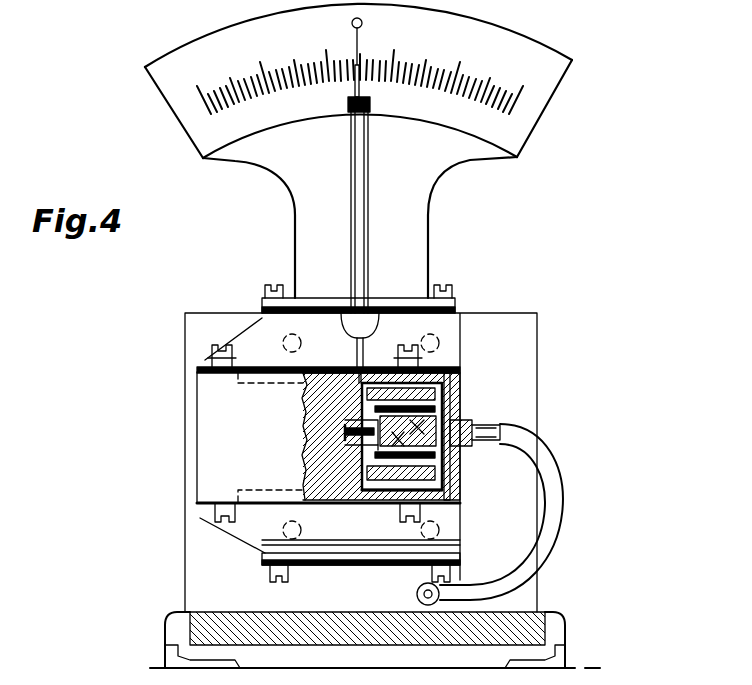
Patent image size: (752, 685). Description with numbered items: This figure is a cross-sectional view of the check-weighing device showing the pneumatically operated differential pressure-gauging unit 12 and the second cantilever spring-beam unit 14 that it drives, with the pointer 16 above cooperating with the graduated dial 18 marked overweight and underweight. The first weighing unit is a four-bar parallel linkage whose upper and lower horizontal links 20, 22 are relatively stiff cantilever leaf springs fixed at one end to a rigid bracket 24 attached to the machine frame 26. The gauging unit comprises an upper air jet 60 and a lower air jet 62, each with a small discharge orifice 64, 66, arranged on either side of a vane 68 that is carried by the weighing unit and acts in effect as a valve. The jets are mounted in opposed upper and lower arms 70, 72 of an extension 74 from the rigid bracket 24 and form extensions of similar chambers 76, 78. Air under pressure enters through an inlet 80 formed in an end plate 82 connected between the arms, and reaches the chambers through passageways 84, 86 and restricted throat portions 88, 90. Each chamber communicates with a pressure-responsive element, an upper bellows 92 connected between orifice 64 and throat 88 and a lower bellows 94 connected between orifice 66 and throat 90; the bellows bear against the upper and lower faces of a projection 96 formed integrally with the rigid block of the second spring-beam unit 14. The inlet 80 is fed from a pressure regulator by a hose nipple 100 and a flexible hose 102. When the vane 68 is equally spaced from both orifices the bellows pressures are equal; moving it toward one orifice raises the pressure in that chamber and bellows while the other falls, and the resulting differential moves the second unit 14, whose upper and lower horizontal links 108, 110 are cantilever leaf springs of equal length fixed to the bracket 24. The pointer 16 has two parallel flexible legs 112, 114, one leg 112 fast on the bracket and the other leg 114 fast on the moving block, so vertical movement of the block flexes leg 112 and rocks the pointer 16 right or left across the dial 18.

The pneumatically operated differential pressure-gauging unit 12 is at (490, 341).
The second cantilever spring-beam unit 14 is at (189, 360).
The pointer 16 is at (370, 178).
The dial 18 is at (560, 63).
The upper horizontal links 20 is at (262, 305).
The lower horizontal links 22 is at (268, 566).
The rigid bracket 24 is at (240, 335).
The machine frame 26 is at (537, 360).
The upper air jet 60 is at (360, 420).
The lower air jet 62 is at (350, 449).
The discharge orifice 64 is at (348, 426).
The discharge orifice 66 is at (345, 440).
The vane 68 is at (350, 432).
The upper arm 70 is at (460, 383).
The lower arm 72 is at (450, 495).
The extension 74 is at (333, 506).
The upper chamber 76 is at (383, 368).
The lower chamber 78 is at (379, 506).
The inlet 80 is at (458, 438).
The end plate 82 is at (450, 397).
The passageway 84 is at (452, 410).
The passageway 86 is at (444, 472).
The restricted throat portion 88 is at (424, 362).
The restricted throat portion 90 is at (440, 503).
The upper bellows 92 is at (423, 426).
The lower bellows 94 is at (398, 441).
The projection 96 is at (440, 455).
The hose nipple 100 is at (490, 431).
The flexible hose 102 is at (566, 456).
The upper horizontal links 108 is at (333, 369).
The lower horizontal links 110 is at (282, 508).
The leg 112 is at (345, 322).
The leg 114 is at (378, 318).